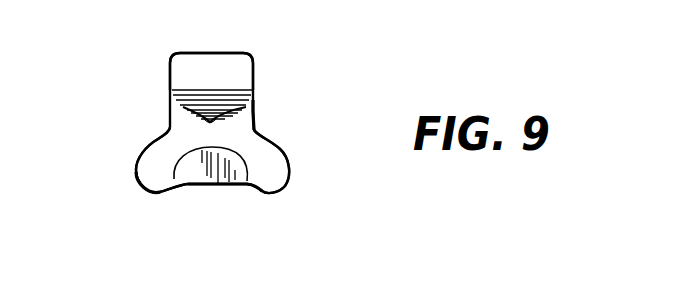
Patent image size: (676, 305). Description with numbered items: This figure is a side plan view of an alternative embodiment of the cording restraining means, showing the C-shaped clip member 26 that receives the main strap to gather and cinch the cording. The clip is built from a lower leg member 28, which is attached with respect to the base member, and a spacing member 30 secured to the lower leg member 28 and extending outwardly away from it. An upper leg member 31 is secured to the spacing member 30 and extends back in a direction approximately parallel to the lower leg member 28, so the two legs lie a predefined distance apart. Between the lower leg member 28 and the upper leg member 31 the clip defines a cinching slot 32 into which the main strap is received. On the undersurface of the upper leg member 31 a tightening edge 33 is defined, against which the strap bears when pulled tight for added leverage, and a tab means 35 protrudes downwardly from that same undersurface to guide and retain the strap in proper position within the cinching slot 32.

The C-shaped clip member 26 is at (253, 117).
The lower leg member 28 is at (203, 183).
The spacing member 30 is at (225, 137).
The upper leg member 31 is at (227, 55).
The cinching slot 32 is at (193, 139).
The tightening edge 33 is at (253, 108).
The tab means 35 is at (192, 126).